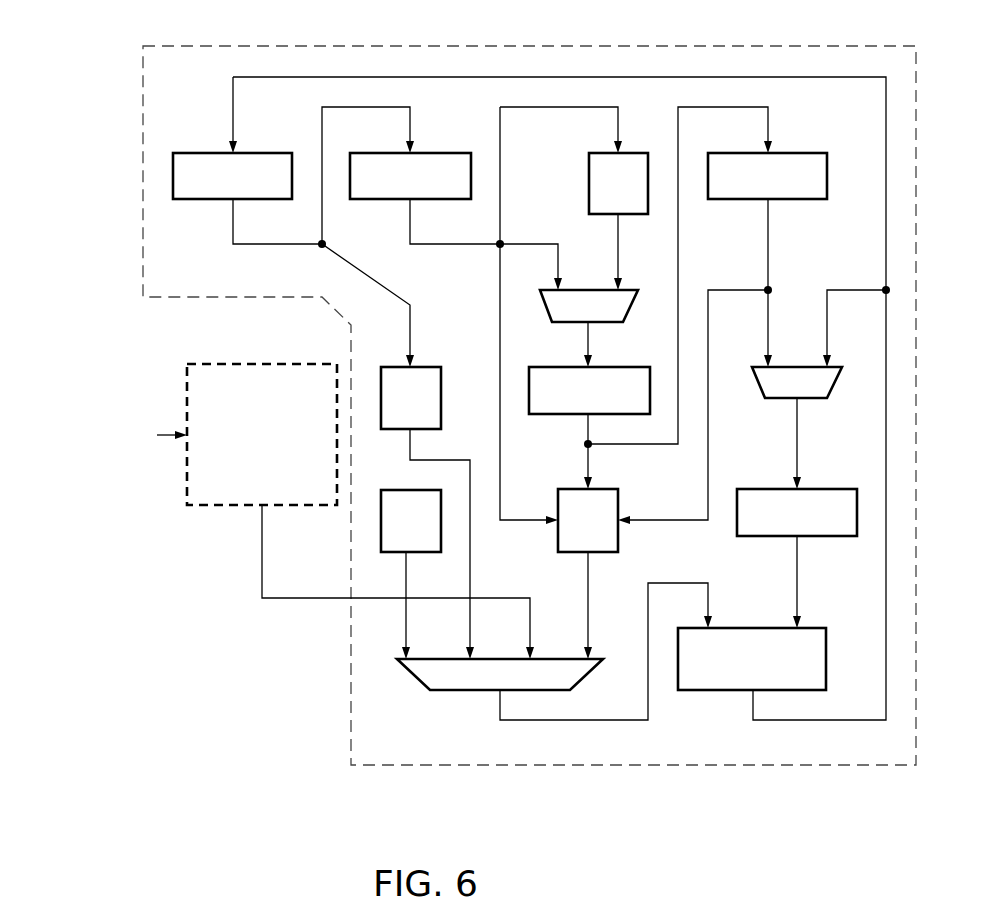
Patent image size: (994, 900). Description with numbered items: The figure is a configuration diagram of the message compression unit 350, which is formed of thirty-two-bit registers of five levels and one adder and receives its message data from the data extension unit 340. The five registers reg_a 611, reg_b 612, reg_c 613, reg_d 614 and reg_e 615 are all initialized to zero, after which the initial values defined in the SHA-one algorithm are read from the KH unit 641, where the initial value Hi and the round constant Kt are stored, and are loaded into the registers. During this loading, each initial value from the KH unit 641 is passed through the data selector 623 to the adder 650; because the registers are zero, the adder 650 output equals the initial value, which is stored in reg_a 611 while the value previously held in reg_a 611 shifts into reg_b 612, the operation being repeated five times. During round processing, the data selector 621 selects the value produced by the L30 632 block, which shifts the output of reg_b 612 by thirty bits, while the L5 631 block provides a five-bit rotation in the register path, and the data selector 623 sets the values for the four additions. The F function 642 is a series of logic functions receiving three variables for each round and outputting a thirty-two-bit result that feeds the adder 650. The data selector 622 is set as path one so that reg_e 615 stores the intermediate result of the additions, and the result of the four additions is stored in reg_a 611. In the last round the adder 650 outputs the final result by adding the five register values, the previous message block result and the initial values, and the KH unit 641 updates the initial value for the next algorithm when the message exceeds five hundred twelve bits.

The message compression unit 350 is at (752, 46).
The data extension unit 340 is at (187, 388).
The reg_a 611 is at (263, 153).
The reg_b 612 is at (440, 152).
The reg_c 613 is at (626, 367).
The reg_d 614 is at (797, 153).
The reg_e 615 is at (821, 489).
The data selector 621 is at (626, 289).
The data selector 622 is at (758, 387).
The data selector 623 is at (416, 678).
The L5 631 is at (441, 398).
The L30 632 is at (589, 175).
The KH unit 641 is at (399, 490).
The F function 642 is at (618, 540).
The adder 650 is at (752, 628).